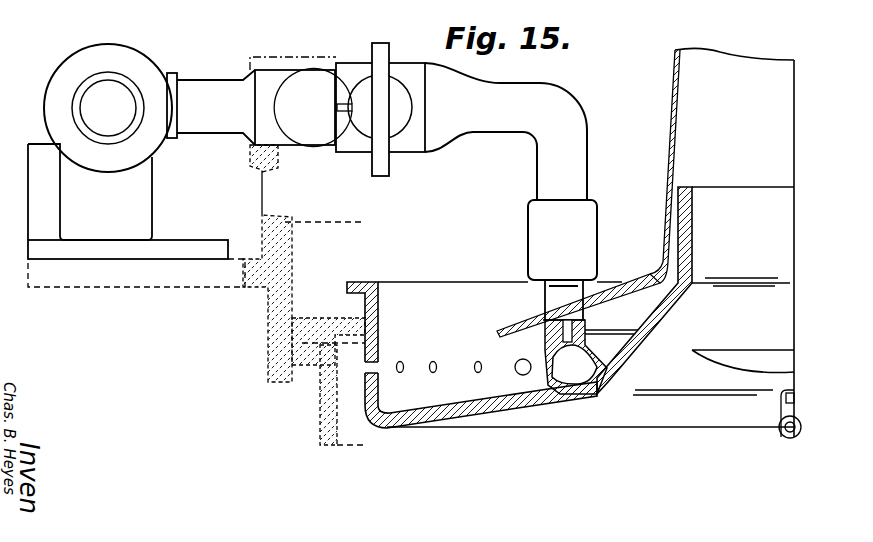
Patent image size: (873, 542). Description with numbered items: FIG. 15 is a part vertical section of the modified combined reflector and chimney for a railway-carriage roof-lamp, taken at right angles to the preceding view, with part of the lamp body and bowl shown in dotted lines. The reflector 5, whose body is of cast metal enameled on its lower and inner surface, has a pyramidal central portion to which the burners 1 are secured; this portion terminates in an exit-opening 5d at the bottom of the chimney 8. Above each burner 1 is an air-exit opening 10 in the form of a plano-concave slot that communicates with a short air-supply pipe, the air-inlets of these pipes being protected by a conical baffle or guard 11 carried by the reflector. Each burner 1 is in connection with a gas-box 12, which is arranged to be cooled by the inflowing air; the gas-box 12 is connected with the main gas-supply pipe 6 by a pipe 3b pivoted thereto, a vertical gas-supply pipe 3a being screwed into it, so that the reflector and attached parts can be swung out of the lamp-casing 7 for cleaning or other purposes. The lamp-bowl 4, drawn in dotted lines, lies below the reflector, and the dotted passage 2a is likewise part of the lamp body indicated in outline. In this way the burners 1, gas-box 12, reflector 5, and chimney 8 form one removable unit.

The burner 1 is at (801, 427).
The conduit branch 2a is at (313, 318).
The vertical gas-supply pipe 3a is at (536, 260).
The horizontal pipe 3b is at (293, 101).
The lamp-bowl 4 is at (334, 441).
The reflector 5 is at (570, 355).
The exit-opening 5d is at (687, 291).
The main gas-supply pipe 6 is at (141, 165).
The lamp-casing 7 is at (281, 206).
The chimney 8 is at (722, 242).
The air-exit opening 10 is at (797, 356).
The conical baffle or guard 11 is at (621, 283).
The gas-box 12 is at (576, 357).